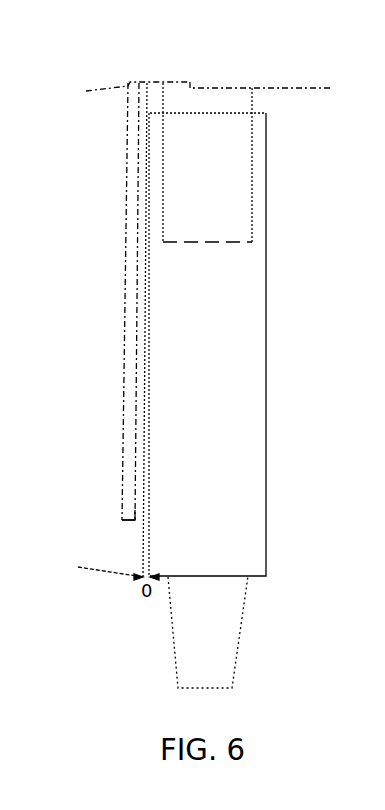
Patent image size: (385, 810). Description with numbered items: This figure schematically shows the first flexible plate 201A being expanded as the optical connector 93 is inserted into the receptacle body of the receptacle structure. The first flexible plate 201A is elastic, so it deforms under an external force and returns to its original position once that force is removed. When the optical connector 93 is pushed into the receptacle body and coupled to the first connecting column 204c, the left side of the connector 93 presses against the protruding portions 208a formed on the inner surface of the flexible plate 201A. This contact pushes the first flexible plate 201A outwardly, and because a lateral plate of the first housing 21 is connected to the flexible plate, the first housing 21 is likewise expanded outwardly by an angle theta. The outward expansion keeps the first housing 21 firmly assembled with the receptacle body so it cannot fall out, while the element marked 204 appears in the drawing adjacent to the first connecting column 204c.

The first flexible plate 201A is at (136, 72).
The cover plate 204 is at (217, 78).
The first connecting column 204c is at (245, 98).
The optical connector 93 is at (257, 450).
The first housing 21 is at (122, 372).
The protruding portions 208a is at (137, 522).